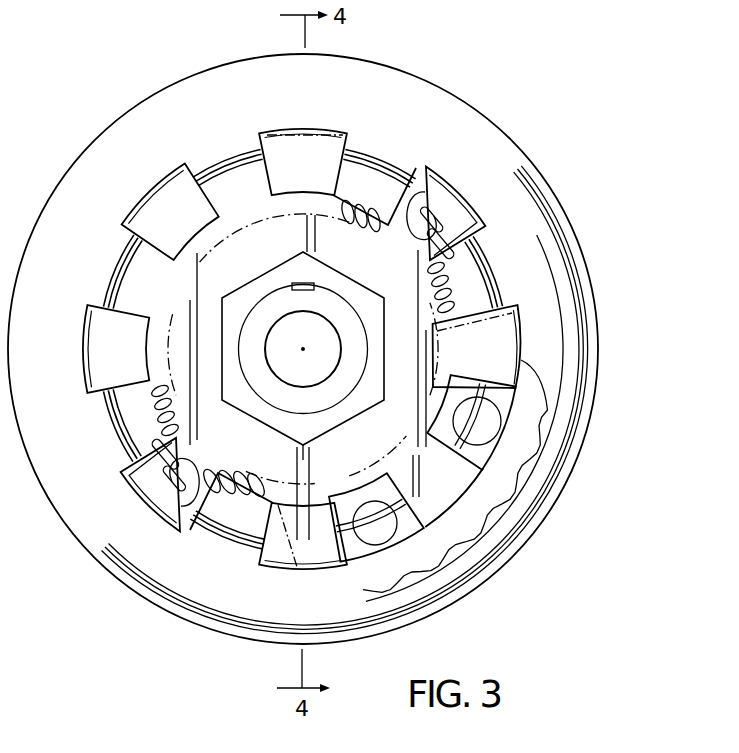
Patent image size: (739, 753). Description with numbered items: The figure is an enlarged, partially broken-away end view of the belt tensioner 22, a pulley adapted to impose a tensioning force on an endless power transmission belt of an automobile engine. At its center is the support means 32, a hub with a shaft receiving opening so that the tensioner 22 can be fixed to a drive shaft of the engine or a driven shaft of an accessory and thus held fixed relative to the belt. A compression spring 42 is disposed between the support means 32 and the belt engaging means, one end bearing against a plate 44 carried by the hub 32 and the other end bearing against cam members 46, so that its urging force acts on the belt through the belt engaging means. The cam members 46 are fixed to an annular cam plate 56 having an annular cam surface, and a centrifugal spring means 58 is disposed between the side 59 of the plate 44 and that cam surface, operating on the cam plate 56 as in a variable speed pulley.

The belt tensioner 22 is at (580, 115).
The support means 32 is at (278, 297).
The compression spring 42 is at (532, 420).
The plate 44 is at (500, 513).
The cam members 46 is at (488, 428).
The annular cam plate 56 is at (560, 270).
The centrifugal spring means 58 is at (360, 230).
The side of plate 59 is at (507, 342).